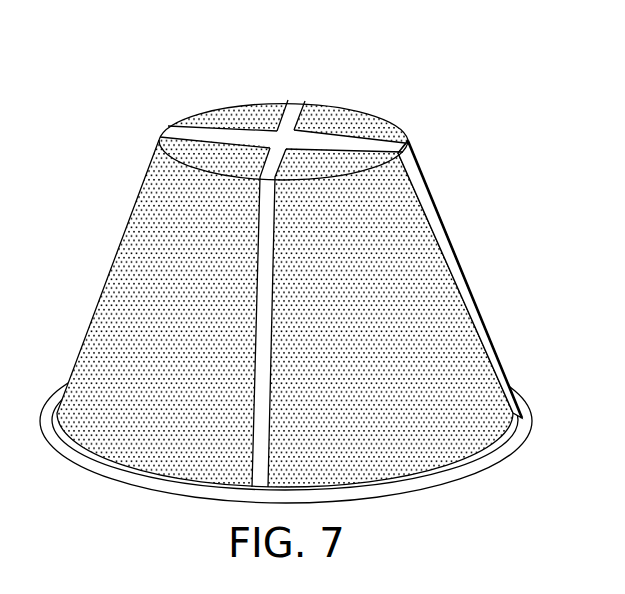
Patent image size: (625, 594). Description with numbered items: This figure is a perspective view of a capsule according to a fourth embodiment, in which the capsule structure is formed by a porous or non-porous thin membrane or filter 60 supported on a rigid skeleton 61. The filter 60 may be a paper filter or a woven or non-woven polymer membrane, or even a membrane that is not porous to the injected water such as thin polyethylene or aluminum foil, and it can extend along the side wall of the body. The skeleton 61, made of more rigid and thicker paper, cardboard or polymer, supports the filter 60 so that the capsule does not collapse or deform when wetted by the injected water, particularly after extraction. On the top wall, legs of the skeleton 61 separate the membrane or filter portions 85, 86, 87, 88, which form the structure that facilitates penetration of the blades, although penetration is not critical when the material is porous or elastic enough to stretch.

The filter 60 is at (408, 255).
The rigid skeleton 61 is at (476, 303).
The membrane or filter portion 85 is at (231, 112).
The membrane or filter portion 86 is at (347, 113).
The membrane or filter portion 87 is at (212, 157).
The membrane or filter portion 88 is at (365, 161).